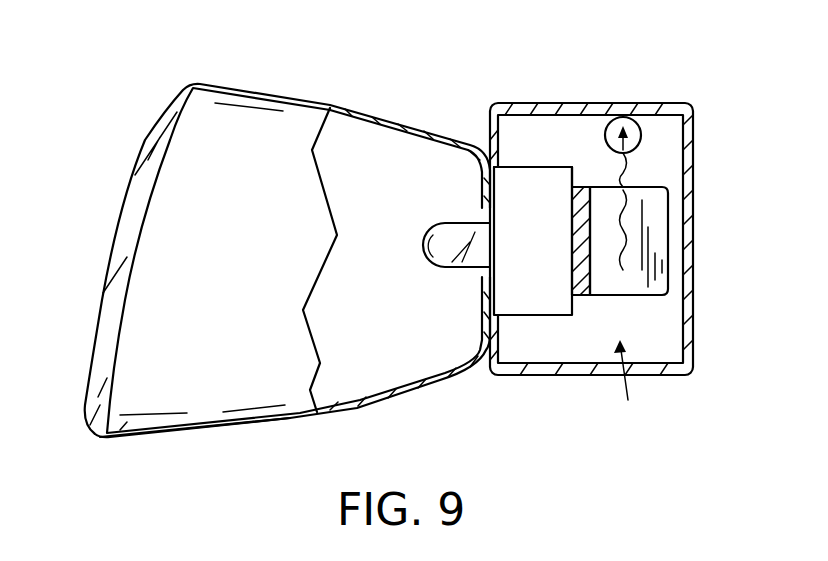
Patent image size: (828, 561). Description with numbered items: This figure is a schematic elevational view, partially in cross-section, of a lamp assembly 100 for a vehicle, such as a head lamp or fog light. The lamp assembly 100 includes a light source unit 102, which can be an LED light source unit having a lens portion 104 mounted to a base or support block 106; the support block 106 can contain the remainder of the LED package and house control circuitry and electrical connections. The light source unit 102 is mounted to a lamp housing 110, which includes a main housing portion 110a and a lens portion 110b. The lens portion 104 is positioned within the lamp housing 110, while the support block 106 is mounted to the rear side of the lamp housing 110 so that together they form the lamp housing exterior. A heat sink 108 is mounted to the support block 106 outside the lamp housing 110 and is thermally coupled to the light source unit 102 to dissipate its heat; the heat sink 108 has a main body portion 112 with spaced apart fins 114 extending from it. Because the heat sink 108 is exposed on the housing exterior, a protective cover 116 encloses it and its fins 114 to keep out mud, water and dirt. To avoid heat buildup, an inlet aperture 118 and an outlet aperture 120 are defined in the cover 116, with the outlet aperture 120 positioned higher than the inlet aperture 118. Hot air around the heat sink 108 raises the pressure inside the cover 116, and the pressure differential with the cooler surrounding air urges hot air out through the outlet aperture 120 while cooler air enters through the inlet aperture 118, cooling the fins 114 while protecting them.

The lamp assembly 100 is at (254, 454).
The light source unit 102 is at (536, 320).
The lens portion 104 is at (470, 258).
The support block 106 is at (537, 177).
The heat sink 108 is at (672, 211).
The lamp housing 110 is at (282, 93).
The main housing portion 110a is at (373, 405).
The lens portion 110b is at (137, 197).
The main body portion 112 is at (583, 283).
The fins 114 is at (663, 267).
The protective cover 116 is at (693, 133).
The inlet aperture 118 is at (630, 375).
The outlet aperture 120 is at (627, 128).